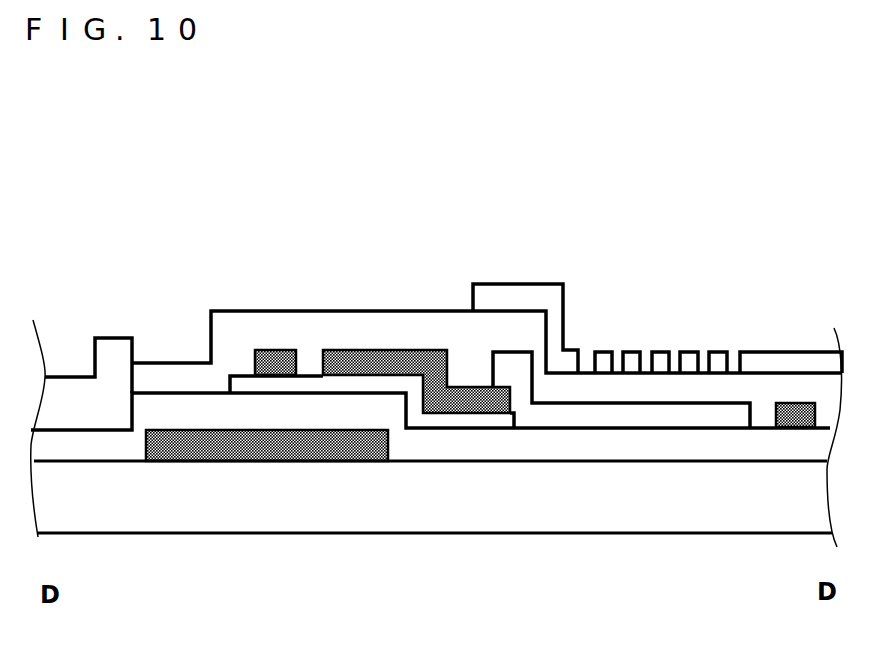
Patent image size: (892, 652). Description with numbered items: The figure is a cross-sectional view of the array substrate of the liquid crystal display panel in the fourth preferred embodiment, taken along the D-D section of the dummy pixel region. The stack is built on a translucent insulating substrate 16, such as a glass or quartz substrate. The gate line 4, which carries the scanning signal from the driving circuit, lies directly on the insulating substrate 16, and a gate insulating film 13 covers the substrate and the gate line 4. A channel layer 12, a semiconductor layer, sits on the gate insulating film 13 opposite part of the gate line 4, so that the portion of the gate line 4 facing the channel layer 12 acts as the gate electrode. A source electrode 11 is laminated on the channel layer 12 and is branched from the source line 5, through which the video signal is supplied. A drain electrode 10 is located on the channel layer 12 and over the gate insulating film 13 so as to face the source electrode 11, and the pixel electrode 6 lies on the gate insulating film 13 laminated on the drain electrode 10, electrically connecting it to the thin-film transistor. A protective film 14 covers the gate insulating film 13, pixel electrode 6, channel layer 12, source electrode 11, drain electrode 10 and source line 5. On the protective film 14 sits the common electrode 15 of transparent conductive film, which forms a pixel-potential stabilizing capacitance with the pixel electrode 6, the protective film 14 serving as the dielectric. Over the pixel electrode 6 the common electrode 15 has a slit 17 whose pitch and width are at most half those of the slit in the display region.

The gate line 4 is at (313, 455).
The source line 5 is at (793, 413).
The pixel electrode 6 is at (640, 414).
The drain electrode 10 is at (423, 350).
The source electrode 11 is at (283, 350).
The channel layer 12 is at (228, 375).
The gate insulating film 13 is at (345, 413).
The protective film 14 is at (353, 330).
The common electrode 15 is at (107, 350).
The insulating substrate 16 is at (113, 499).
The slit 17 is at (750, 330).